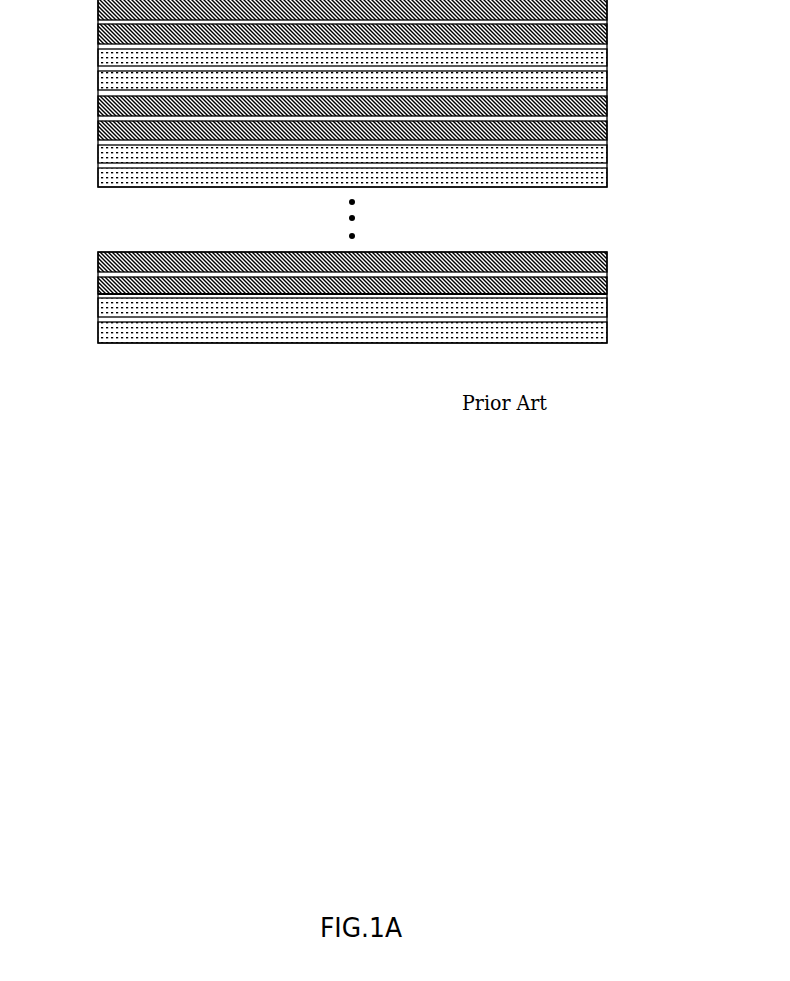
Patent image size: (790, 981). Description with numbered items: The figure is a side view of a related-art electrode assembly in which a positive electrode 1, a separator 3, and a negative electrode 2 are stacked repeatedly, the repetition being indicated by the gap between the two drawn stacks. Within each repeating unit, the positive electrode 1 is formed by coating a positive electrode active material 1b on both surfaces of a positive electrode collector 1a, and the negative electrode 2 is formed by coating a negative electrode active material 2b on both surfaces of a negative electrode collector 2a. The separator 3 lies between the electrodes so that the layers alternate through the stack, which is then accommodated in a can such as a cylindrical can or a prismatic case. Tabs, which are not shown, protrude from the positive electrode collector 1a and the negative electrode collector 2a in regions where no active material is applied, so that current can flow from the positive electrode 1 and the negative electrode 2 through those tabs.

The positive electrode 1 is at (395, 319).
The positive electrode collector 1a is at (607, 322).
The positive electrode active material 1b is at (607, 300).
The negative electrode 2 is at (395, 273).
The negative electrode collector 2a is at (607, 278).
The negative electrode active material 2b is at (607, 257).
The separator 3 is at (371, 296).